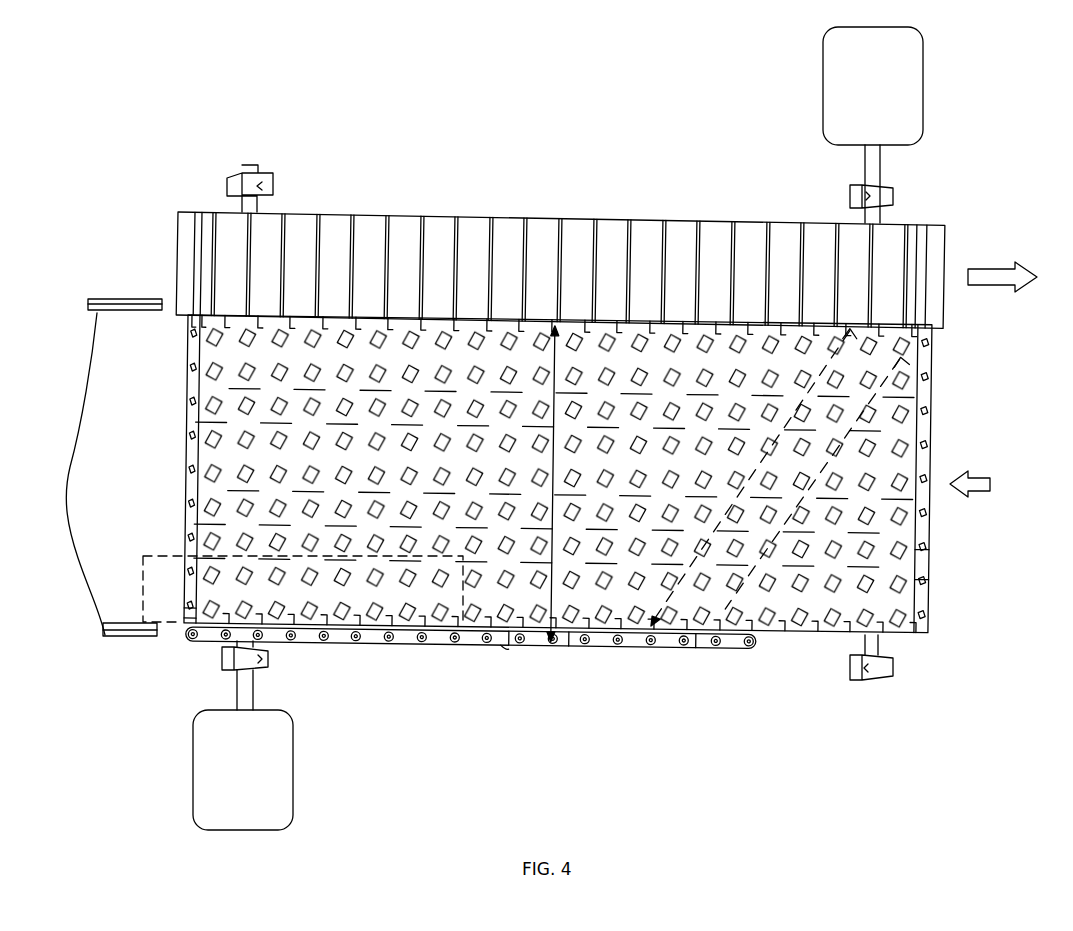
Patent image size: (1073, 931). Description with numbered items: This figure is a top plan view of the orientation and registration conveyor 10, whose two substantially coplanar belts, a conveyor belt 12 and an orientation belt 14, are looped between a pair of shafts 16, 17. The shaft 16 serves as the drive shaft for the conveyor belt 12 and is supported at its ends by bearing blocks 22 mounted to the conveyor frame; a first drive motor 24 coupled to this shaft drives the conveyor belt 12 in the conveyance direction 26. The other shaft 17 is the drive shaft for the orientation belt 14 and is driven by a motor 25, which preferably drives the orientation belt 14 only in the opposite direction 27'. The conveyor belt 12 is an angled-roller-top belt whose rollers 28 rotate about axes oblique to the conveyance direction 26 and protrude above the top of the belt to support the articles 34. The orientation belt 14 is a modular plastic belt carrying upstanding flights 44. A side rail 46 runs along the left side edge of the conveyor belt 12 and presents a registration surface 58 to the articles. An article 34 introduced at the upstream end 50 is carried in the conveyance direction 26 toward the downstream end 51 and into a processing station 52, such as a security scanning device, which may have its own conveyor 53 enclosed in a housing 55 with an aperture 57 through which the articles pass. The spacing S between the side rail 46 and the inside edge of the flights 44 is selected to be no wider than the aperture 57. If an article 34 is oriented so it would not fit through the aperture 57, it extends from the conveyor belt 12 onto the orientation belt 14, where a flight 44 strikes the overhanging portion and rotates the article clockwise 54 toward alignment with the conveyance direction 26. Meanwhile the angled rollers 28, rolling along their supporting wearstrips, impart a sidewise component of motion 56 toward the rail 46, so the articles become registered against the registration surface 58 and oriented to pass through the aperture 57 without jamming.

The conveyor 10 is at (633, 130).
The conveyor belt 12 is at (771, 645).
The orientation belt 14 is at (442, 220).
The shaft 16 is at (237, 692).
The shaft 17 is at (880, 165).
The bearing blocks 22 is at (893, 196).
The first drive motor 24 is at (198, 780).
The motor 25 is at (923, 92).
The conveyance direction 26 is at (990, 482).
The opposite direction 27' is at (1002, 263).
The rollers 28 is at (613, 648).
The articles 34 is at (936, 353).
The flights 44 is at (838, 235).
The side rail 46 is at (681, 652).
The upstream end 50 is at (931, 576).
The downstream end 51 is at (187, 598).
The processing station 52 is at (118, 299).
The conveyor 53 is at (92, 598).
The clockwise rotation 54 is at (822, 407).
The housing 55 is at (109, 638).
The sidewise component of motion 56 is at (490, 476).
The aperture 57 is at (152, 335).
The registration surface 58 is at (514, 648).
The spacing S is at (570, 598).